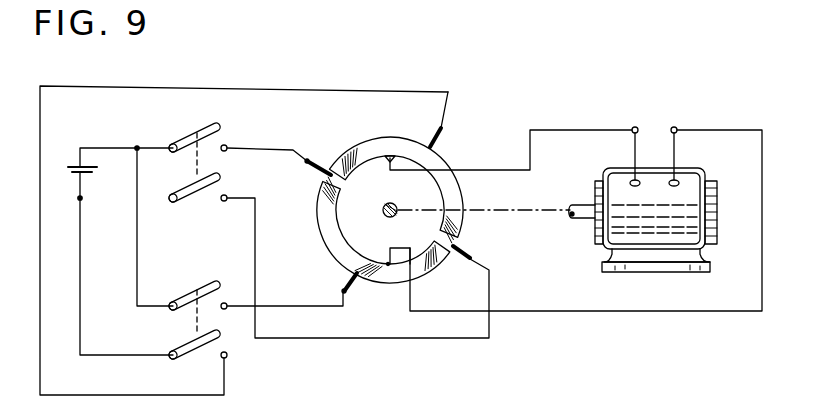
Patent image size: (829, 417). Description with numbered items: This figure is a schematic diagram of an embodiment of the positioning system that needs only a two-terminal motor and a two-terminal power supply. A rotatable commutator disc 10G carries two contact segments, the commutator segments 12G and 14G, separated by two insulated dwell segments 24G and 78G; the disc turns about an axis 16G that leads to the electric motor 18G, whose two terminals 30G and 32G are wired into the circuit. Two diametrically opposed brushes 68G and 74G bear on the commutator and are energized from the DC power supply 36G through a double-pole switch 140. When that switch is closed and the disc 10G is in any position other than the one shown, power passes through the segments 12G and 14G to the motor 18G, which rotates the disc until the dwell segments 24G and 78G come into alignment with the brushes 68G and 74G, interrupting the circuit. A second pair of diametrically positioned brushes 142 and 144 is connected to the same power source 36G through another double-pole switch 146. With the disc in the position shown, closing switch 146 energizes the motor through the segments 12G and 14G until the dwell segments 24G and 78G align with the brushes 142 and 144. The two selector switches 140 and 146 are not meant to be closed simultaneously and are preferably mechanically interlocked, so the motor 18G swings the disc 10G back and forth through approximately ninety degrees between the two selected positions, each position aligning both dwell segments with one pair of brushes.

The commutator disc 10G is at (376, 219).
The commutator segment 12G is at (366, 142).
The commutator segment 14G is at (332, 245).
The axis / shaft line to motor 16G is at (502, 211).
The electric motor 18G is at (653, 228).
The dwell segment 24G is at (324, 186).
The motor terminal 30G is at (676, 127).
The motor terminal 32G is at (636, 127).
The power supply 36G is at (70, 170).
The brush 68G is at (317, 158).
The brush 74G is at (460, 263).
The dwell segment 78G is at (455, 235).
The double-pole switch 140 is at (201, 130).
The brush 142 is at (443, 128).
The brush 144 is at (349, 291).
The double-pole switch 146 is at (201, 292).